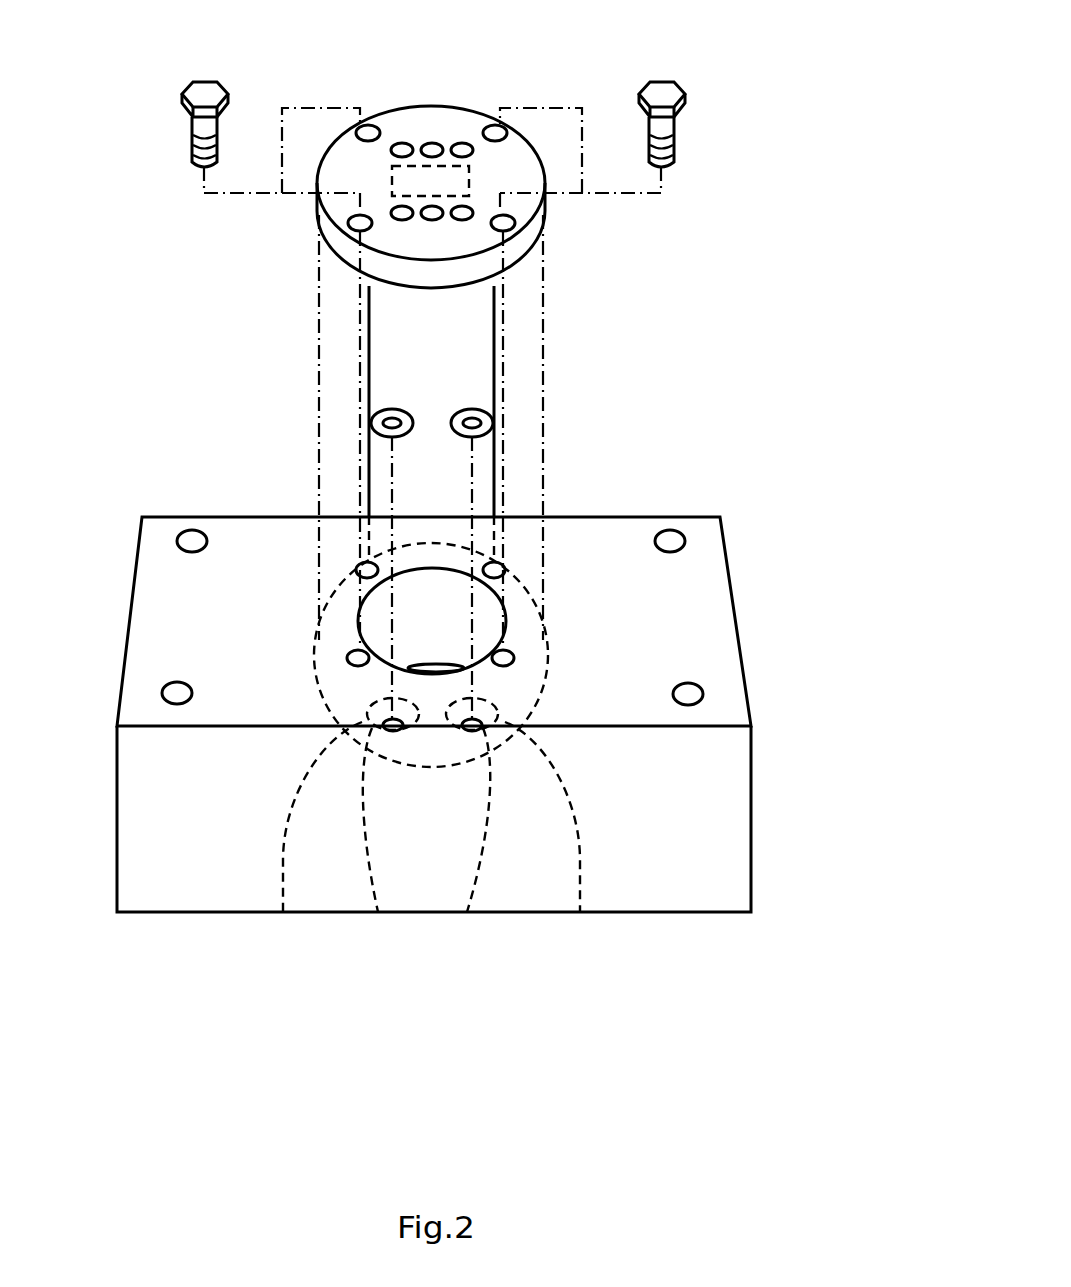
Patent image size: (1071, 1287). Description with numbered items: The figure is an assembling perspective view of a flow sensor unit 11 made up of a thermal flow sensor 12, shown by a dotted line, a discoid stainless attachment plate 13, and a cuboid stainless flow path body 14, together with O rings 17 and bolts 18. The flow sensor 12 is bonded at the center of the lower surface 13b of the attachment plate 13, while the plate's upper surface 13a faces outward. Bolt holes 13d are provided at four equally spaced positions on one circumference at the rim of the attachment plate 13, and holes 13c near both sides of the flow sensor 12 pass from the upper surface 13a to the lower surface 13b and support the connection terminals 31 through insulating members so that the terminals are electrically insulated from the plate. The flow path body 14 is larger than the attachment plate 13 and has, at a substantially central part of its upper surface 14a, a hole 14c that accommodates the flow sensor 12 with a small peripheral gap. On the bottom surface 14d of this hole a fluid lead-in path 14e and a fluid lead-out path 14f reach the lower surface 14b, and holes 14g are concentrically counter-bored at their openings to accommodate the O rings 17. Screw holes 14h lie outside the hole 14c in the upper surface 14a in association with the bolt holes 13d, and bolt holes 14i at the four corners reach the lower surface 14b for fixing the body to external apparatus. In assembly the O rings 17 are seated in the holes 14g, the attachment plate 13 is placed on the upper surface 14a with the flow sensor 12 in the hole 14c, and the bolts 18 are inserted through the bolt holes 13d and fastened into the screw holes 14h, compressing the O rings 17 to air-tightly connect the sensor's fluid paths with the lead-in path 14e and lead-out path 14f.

The flow sensor unit 11 is at (708, 82).
The thermal flow sensor 12 is at (387, 160).
The attachment plate 13 is at (328, 247).
The upper surface 13a is at (470, 125).
The lower surface 13b is at (347, 267).
The holes 13c is at (402, 221).
The bolt holes 13d is at (356, 131).
The flow path body 14 is at (128, 582).
The upper surface 14a is at (257, 533).
The lower surface 14b is at (152, 912).
The hole 14c is at (417, 580).
The bottom surface 14d is at (437, 667).
The fluid lead-in path 14e is at (378, 912).
The fluid lead-out path 14f is at (467, 912).
The holes 14g is at (283, 912).
The screw holes 14h is at (355, 652).
The bolt holes 14i is at (192, 530).
The O rings 17 is at (392, 409).
The bolts 18 is at (192, 147).
The connection terminals 31 is at (462, 143).